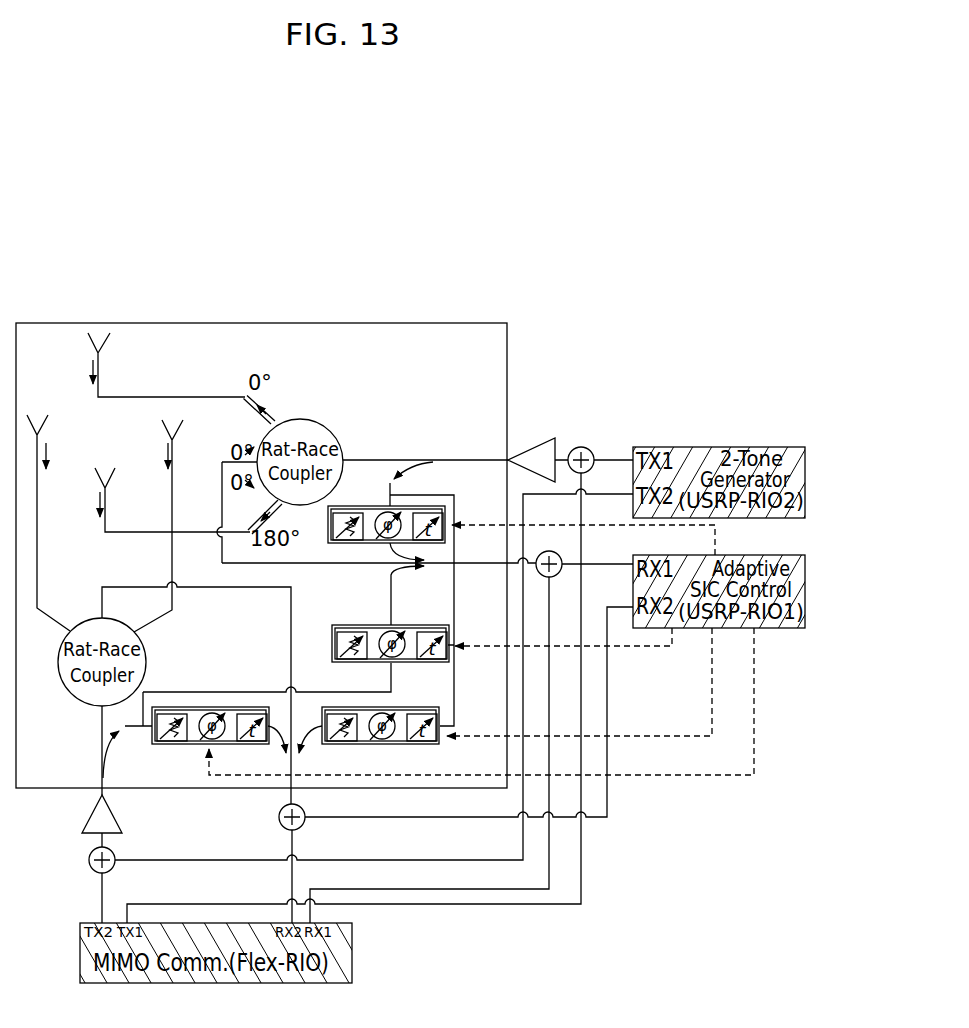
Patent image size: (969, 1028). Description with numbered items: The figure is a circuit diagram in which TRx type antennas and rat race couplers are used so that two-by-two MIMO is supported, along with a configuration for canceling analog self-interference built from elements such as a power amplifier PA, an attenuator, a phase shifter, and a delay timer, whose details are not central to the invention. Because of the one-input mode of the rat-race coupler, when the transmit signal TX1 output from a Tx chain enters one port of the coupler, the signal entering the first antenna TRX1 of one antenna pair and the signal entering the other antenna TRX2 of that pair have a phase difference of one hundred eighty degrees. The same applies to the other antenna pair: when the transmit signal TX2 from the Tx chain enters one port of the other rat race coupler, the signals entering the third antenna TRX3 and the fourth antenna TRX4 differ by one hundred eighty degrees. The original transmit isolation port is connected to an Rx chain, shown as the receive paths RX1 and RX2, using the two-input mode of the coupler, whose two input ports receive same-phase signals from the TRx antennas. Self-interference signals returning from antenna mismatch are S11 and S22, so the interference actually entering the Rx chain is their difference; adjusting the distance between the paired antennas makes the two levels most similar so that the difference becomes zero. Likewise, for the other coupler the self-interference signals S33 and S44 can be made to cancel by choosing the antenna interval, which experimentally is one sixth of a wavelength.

The TRx 1 antenna TRX1 is at (166, 365).
The TRx 2 antenna TRX2 is at (172, 500).
The TRx 3 antenna TRX3 is at (65, 522).
The TRx 4 antenna TRX4 is at (186, 523).
The self-interference signal S11 is at (75, 372).
The self-interference signal S22 is at (82, 507).
The self-interference signal S33 is at (64, 460).
The reflection at antenna port 4 S44 is at (149, 458).
The Tx 1 signal TX1 is at (425, 451).
The Tx 2 signal TX2 is at (345, 706).
The first receive signal path RX1 is at (379, 552).
The second receive signal path RX2 is at (462, 765).
The power amplifier PA is at (318, 636).